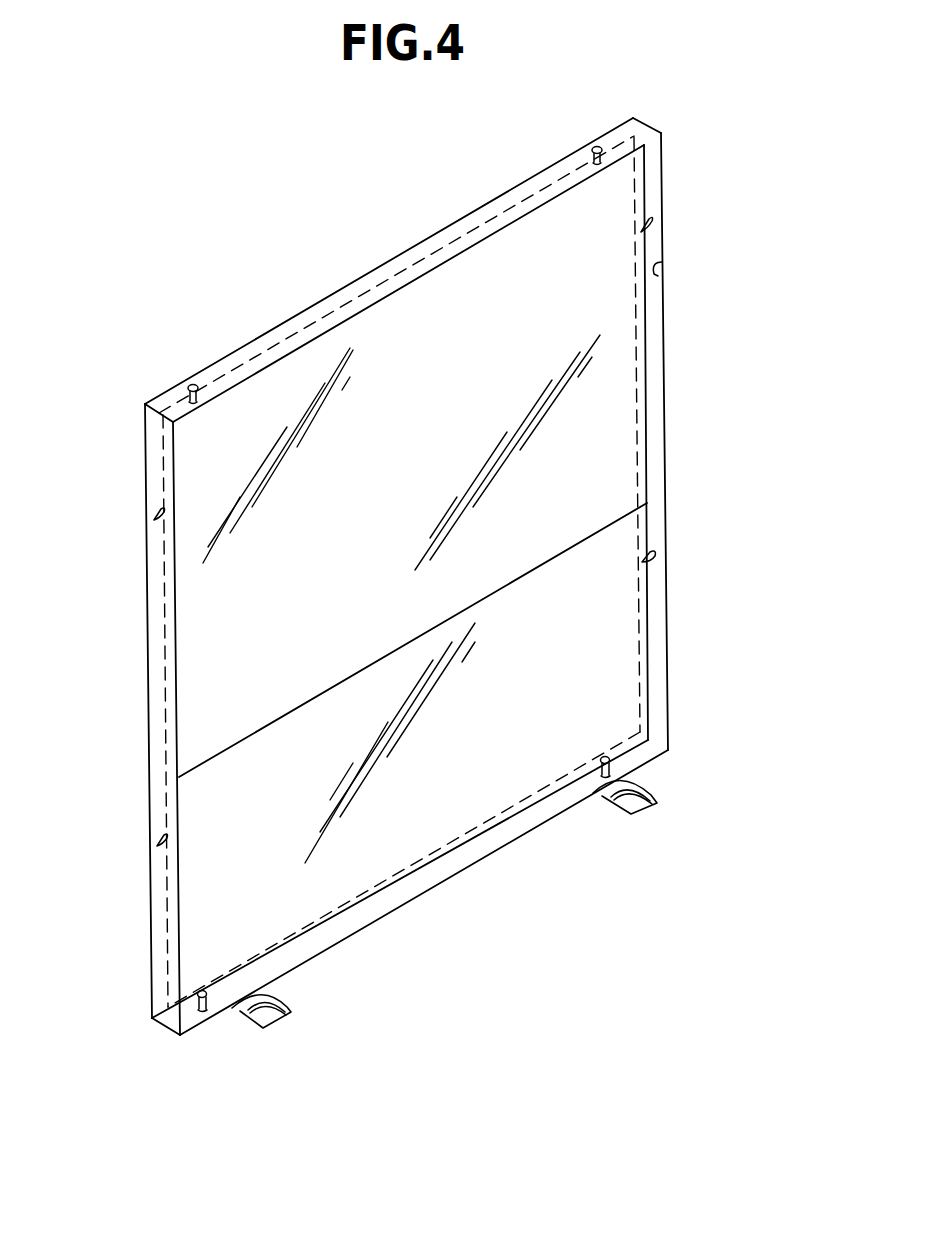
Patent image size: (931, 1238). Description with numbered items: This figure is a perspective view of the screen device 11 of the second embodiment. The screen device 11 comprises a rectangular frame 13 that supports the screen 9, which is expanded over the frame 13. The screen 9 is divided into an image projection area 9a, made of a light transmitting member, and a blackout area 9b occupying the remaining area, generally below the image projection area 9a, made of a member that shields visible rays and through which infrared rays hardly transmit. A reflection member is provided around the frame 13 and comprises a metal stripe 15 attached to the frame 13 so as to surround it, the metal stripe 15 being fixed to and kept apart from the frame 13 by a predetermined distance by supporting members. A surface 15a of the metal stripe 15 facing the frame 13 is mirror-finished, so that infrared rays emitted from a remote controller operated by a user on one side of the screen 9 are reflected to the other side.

The screen device 11 is at (232, 294).
The metal stripe 15 is at (372, 273).
The rectangular frame 13 is at (643, 183).
The surface of the metal stripe 15a is at (656, 273).
The screen 9 is at (773, 417).
The image projection area 9a is at (602, 460).
The blackout area 9b is at (612, 615).